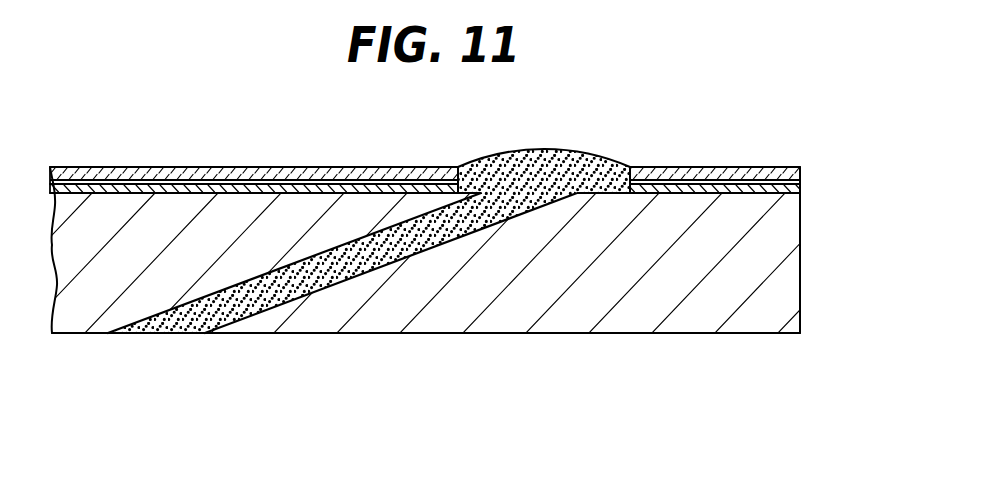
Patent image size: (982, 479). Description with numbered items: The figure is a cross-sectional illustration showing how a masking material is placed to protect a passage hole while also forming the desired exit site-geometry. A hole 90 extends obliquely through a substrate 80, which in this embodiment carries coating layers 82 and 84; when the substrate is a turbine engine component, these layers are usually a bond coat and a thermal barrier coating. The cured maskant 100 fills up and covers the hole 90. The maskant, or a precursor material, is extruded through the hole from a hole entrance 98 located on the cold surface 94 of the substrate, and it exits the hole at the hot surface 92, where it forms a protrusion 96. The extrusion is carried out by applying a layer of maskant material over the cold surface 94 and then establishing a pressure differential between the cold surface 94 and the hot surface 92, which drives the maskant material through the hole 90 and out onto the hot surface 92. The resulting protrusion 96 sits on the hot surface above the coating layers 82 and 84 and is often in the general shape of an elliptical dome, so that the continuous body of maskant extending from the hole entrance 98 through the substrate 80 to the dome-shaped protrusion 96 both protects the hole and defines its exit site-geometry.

The substrate 80 is at (803, 270).
The coating layer 82 is at (802, 188).
The coating layer 84 is at (802, 178).
The hole 90 is at (347, 280).
The hot surface 92 is at (723, 167).
The cold surface 94 is at (743, 335).
The protrusion 96 is at (580, 153).
The hole entrance 98 is at (165, 334).
The cured maskant 100 is at (498, 210).